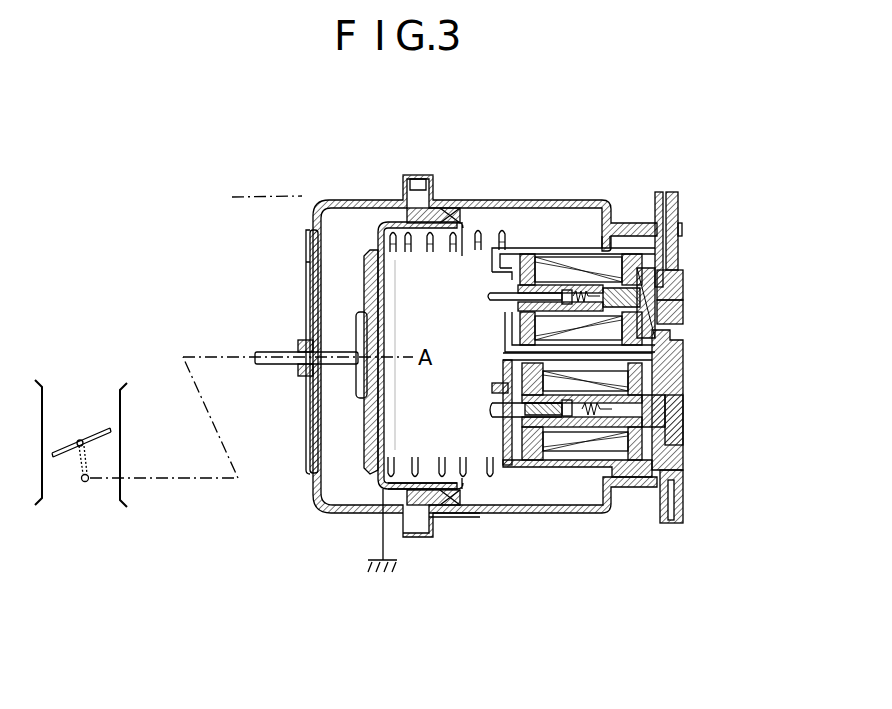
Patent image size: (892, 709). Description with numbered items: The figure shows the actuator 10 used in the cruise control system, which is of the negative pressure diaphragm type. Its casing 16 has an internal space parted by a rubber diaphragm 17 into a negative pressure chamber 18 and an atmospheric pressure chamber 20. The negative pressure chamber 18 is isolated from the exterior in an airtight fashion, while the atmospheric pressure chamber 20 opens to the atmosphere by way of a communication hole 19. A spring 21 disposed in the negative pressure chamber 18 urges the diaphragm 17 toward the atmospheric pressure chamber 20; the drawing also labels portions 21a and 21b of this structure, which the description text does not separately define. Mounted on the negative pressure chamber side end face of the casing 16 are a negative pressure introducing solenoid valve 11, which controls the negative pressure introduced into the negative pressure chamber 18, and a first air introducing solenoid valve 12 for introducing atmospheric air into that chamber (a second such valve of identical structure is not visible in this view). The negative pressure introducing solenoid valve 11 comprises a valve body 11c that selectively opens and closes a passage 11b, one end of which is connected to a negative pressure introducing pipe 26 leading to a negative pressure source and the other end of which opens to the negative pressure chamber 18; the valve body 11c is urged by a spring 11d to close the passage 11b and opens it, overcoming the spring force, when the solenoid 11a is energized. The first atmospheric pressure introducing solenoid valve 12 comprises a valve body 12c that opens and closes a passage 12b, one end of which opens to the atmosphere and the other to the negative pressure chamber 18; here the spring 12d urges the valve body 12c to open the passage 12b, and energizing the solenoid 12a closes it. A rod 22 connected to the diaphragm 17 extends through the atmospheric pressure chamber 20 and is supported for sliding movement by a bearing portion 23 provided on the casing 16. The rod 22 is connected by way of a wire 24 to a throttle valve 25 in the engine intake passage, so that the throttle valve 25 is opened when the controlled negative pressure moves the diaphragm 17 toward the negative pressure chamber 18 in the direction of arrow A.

The actuator 10 is at (513, 188).
The negative pressure introducing solenoid valve 11 is at (633, 240).
The solenoid 11a is at (565, 250).
The passage 11b is at (503, 292).
The valve body 11c is at (684, 305).
The spring 11d is at (510, 322).
The first atmospheric pressure introducing solenoid valve 12 is at (626, 500).
The solenoid 12a is at (572, 504).
The passage 12b is at (496, 412).
The valve body 12c is at (496, 392).
The spring 12d is at (683, 378).
The casing 16 is at (448, 196).
The diaphragm 17 is at (384, 276).
The negative pressure chamber 18 is at (452, 325).
The communication hole 19 is at (322, 272).
The atmospheric pressure chamber 20 is at (355, 305).
The spring 21 is at (478, 232).
The inner cup top wall 21a is at (590, 222).
The inner cup bottom wall 21b is at (400, 468).
The rod 22 is at (338, 368).
The bearing portion 23 is at (300, 347).
The wire 24 is at (207, 412).
The throttle valve 25 is at (100, 425).
The negative pressure introducing pipe 26 is at (870, 192).